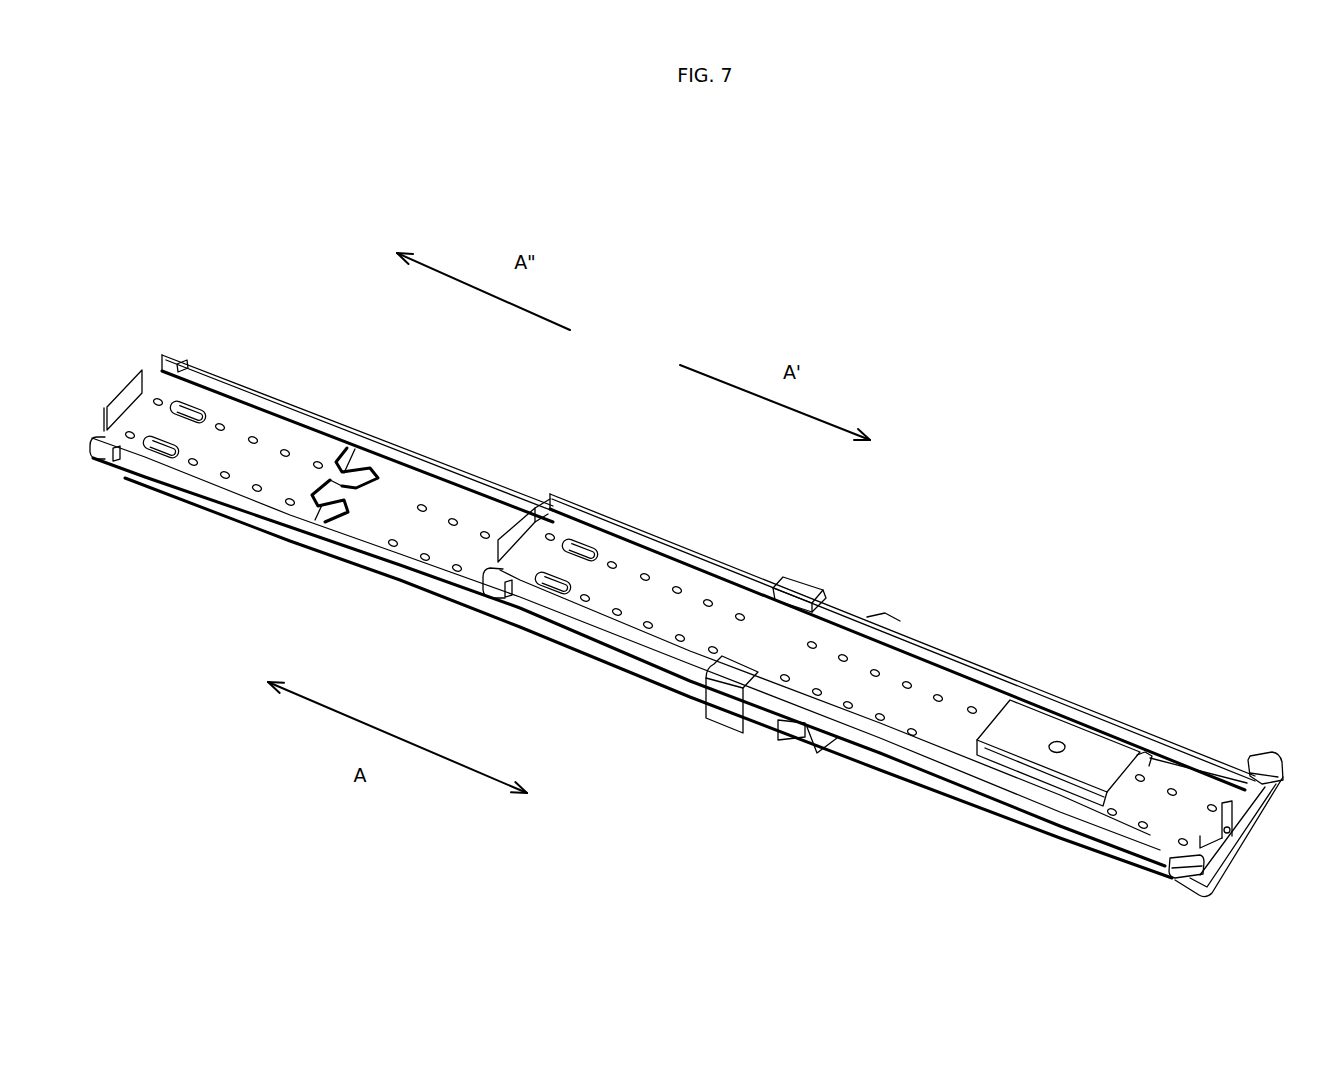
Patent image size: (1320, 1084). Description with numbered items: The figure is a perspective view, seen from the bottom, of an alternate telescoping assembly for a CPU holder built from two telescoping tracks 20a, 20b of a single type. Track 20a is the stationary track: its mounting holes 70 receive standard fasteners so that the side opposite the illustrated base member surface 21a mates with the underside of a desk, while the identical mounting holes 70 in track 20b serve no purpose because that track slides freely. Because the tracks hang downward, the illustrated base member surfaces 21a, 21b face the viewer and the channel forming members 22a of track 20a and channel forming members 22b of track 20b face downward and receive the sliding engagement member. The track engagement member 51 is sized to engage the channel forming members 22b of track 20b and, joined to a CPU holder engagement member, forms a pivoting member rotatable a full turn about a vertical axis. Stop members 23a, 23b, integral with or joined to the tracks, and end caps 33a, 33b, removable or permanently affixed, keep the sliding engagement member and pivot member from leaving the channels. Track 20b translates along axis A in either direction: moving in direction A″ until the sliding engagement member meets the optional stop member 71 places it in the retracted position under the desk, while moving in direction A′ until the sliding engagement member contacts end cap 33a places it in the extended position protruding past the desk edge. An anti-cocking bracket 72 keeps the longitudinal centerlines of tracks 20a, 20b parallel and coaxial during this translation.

The telescoping track 20a is at (623, 602).
The base member surface 21a is at (308, 455).
The channel forming members 22a is at (378, 552).
The stop member 23a is at (124, 395).
The telescoping track 20b is at (894, 674).
The base member surface 21b is at (833, 645).
The channel forming members 22b is at (912, 730).
The stop member 23b is at (537, 508).
The mounting holes 70 is at (193, 466).
The optional stop member 71 is at (318, 520).
The anti-cocking bracket 72 is at (727, 707).
The end cap 33a is at (803, 747).
The end cap 33b is at (1270, 762).
The track engagement member 51 is at (1080, 753).